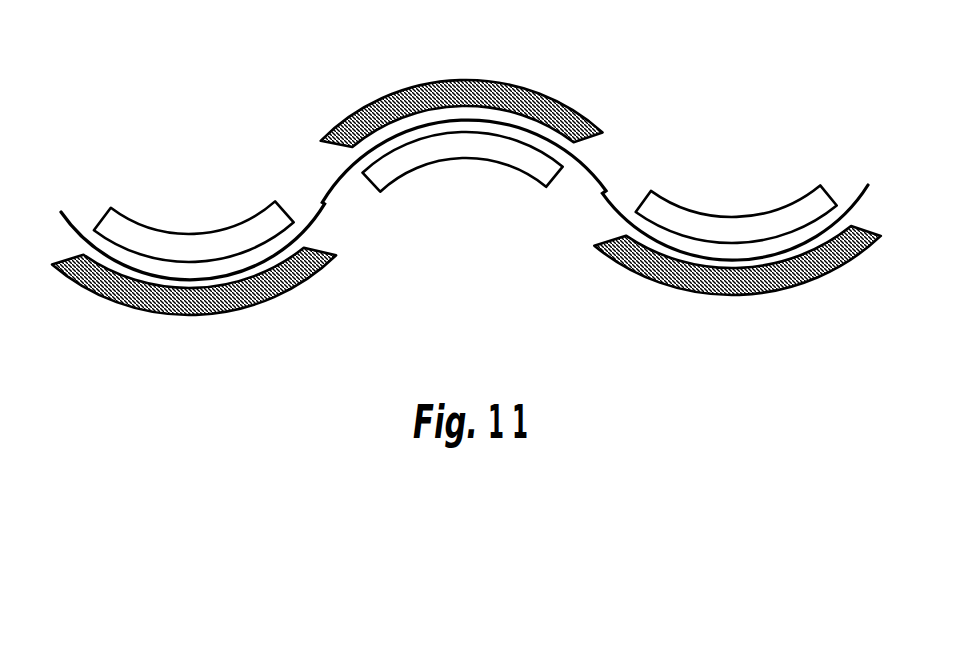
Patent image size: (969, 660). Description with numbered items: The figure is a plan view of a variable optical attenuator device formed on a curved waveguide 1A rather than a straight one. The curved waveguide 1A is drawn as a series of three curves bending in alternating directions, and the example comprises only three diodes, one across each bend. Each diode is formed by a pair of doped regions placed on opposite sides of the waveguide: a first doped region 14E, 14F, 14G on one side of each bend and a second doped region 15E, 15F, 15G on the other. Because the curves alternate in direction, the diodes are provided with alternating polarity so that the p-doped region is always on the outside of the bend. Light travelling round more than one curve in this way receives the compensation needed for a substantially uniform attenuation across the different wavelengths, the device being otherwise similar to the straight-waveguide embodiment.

The curved waveguide 1A is at (324, 194).
The first electrode (E) 14E is at (200, 236).
The first electrode (F) 14F is at (463, 80).
The first electrode (G) 14G is at (742, 217).
The second electrode (E) 15E is at (187, 317).
The second electrode (F) 15F is at (453, 160).
The second electrode (G) 15G is at (727, 297).